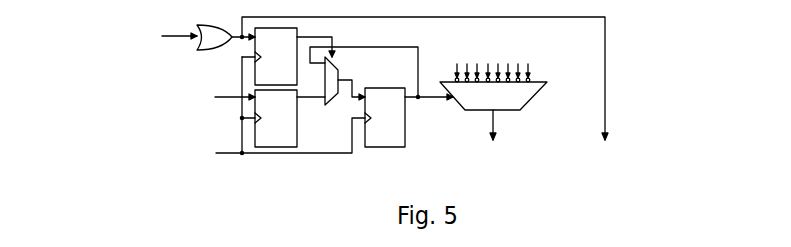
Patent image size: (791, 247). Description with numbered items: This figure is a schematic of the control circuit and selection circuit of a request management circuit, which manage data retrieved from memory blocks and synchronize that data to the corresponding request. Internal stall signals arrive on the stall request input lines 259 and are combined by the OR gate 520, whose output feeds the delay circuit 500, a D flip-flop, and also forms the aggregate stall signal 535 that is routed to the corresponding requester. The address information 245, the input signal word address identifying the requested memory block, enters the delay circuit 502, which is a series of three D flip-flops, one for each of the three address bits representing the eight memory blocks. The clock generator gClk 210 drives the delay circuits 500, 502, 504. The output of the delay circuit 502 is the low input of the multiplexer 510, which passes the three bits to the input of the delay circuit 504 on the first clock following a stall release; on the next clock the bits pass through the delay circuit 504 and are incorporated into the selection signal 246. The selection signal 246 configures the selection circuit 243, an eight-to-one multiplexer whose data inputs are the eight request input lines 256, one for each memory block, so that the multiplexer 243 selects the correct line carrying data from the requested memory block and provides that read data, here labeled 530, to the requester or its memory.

The stall request input lines 259 is at (102, 46).
The OR gate 520 is at (219, 27).
The address information 245 is at (161, 97).
The clock generator gClk 210 is at (255, 110).
The delay circuit 500 is at (269, 57).
The delay circuit 502 is at (283, 118).
The delay circuit 504 is at (385, 117).
The multiplexer 510 is at (338, 80).
The request input lines 256 is at (492, 54).
The selection circuit 243 is at (493, 96).
The selection signal 246 is at (433, 99).
The CMRdData output 530 is at (505, 132).
The aggregate stall signal 535 is at (451, 85).